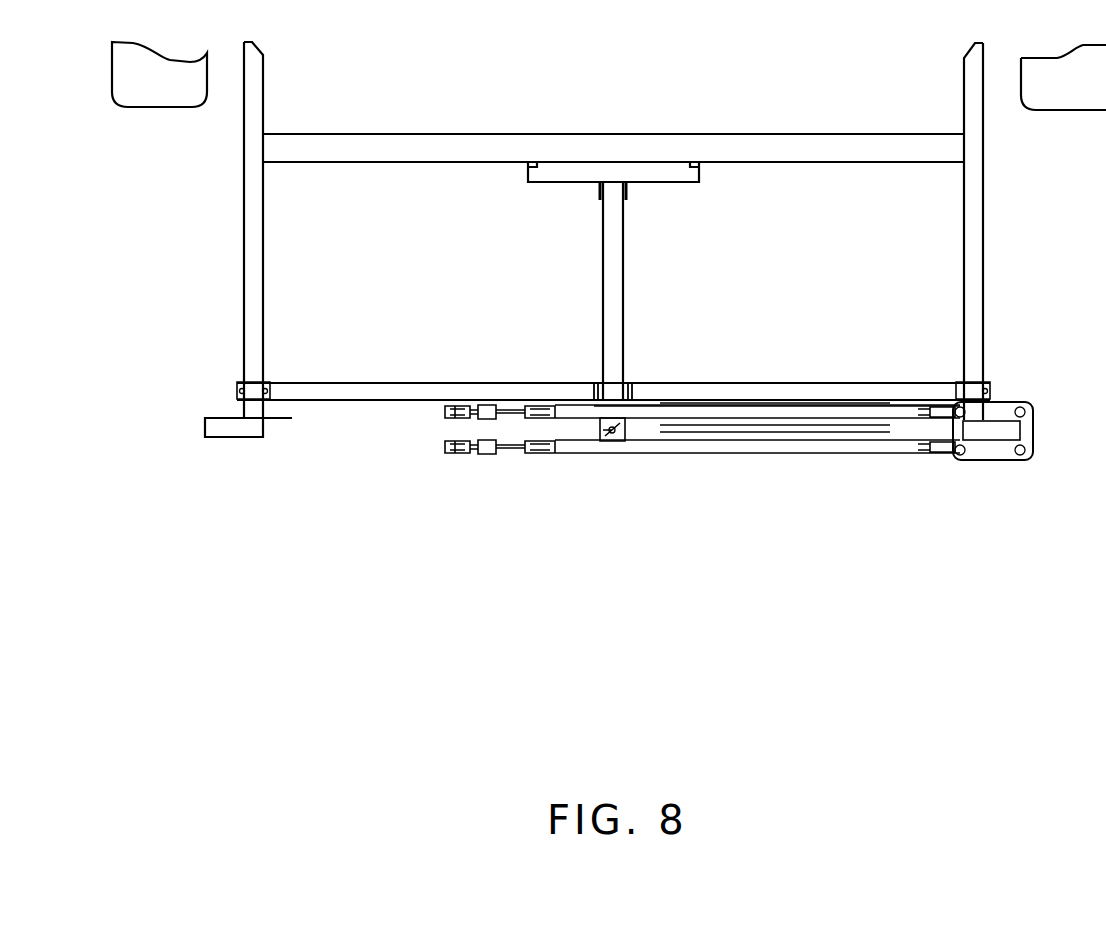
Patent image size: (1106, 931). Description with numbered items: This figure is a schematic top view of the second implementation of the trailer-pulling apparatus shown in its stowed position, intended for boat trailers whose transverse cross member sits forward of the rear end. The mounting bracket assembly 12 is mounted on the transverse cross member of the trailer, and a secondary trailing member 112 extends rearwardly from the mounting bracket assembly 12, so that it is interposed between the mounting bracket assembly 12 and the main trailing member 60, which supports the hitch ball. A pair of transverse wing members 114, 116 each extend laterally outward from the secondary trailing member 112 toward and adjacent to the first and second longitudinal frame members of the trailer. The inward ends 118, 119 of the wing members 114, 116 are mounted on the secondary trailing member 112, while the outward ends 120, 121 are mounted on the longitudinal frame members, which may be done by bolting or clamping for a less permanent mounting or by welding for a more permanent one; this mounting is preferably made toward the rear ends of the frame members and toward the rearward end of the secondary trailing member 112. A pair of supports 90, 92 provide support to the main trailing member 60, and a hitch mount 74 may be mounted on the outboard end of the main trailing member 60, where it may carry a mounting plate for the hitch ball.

The mounting bracket assembly 12 is at (662, 184).
The secondary trailing member 112 is at (617, 321).
The transverse wing member 114 is at (370, 391).
The transverse wing member 116 is at (760, 388).
The inward end 118 is at (593, 388).
The inward end 119 is at (632, 388).
The outward end 120 is at (272, 392).
The outward end 121 is at (955, 392).
The hitch mount 74 is at (1005, 410).
The support 90 is at (750, 452).
The support 92 is at (803, 418).
The main trailing member 60 is at (822, 432).